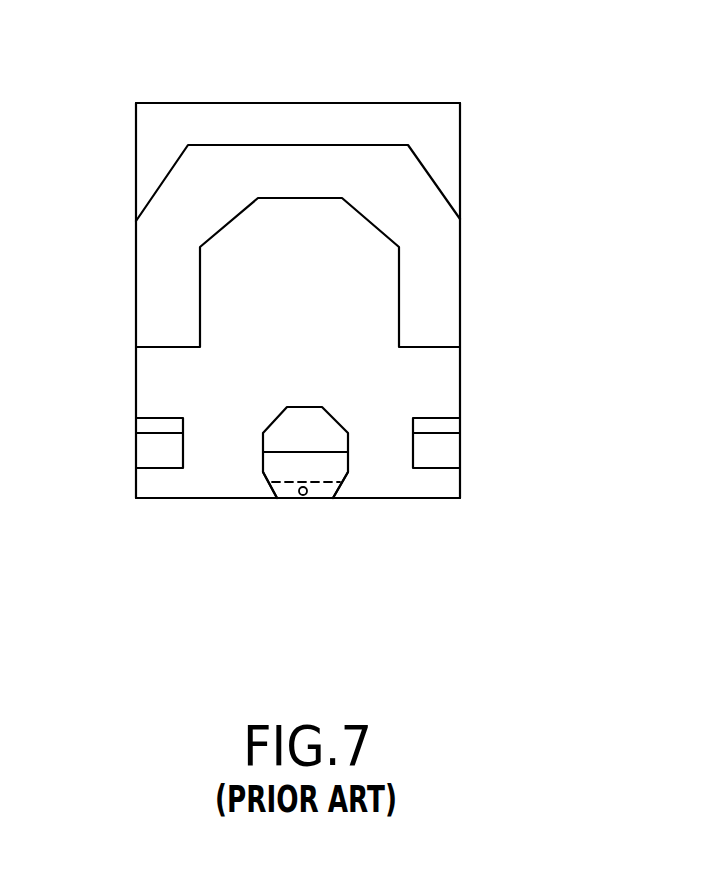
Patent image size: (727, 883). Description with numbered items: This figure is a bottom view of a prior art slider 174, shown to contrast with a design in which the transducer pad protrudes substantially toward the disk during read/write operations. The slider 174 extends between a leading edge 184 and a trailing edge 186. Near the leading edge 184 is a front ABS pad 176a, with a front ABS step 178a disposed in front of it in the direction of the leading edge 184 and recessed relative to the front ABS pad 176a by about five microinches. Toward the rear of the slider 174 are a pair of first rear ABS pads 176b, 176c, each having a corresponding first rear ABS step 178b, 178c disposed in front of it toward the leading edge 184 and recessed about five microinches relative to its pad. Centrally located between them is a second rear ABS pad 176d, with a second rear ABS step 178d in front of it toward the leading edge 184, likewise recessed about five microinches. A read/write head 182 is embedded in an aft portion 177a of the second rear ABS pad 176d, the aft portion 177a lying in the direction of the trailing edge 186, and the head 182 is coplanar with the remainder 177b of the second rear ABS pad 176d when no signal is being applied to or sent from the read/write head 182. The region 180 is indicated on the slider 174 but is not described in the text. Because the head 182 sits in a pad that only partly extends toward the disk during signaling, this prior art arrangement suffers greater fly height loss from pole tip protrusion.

The slider 174 is at (460, 103).
The front ABS pad 176a is at (332, 185).
The first rear ABS pad 176b is at (155, 450).
The first rear ABS pad 176c is at (440, 450).
The second rear ABS pad 176d is at (263, 473).
The aft portion 177a is at (288, 482).
The remainder 177b is at (337, 465).
The front ABS step 178a is at (312, 128).
The first rear ABS step 178b is at (158, 427).
The first rear ABS step 178c is at (437, 423).
The second rear ABS step 178d is at (303, 428).
The cavity 180 is at (308, 280).
The read/write head 182 is at (303, 495).
The leading edge 184 is at (228, 103).
The trailing edge 186 is at (408, 498).